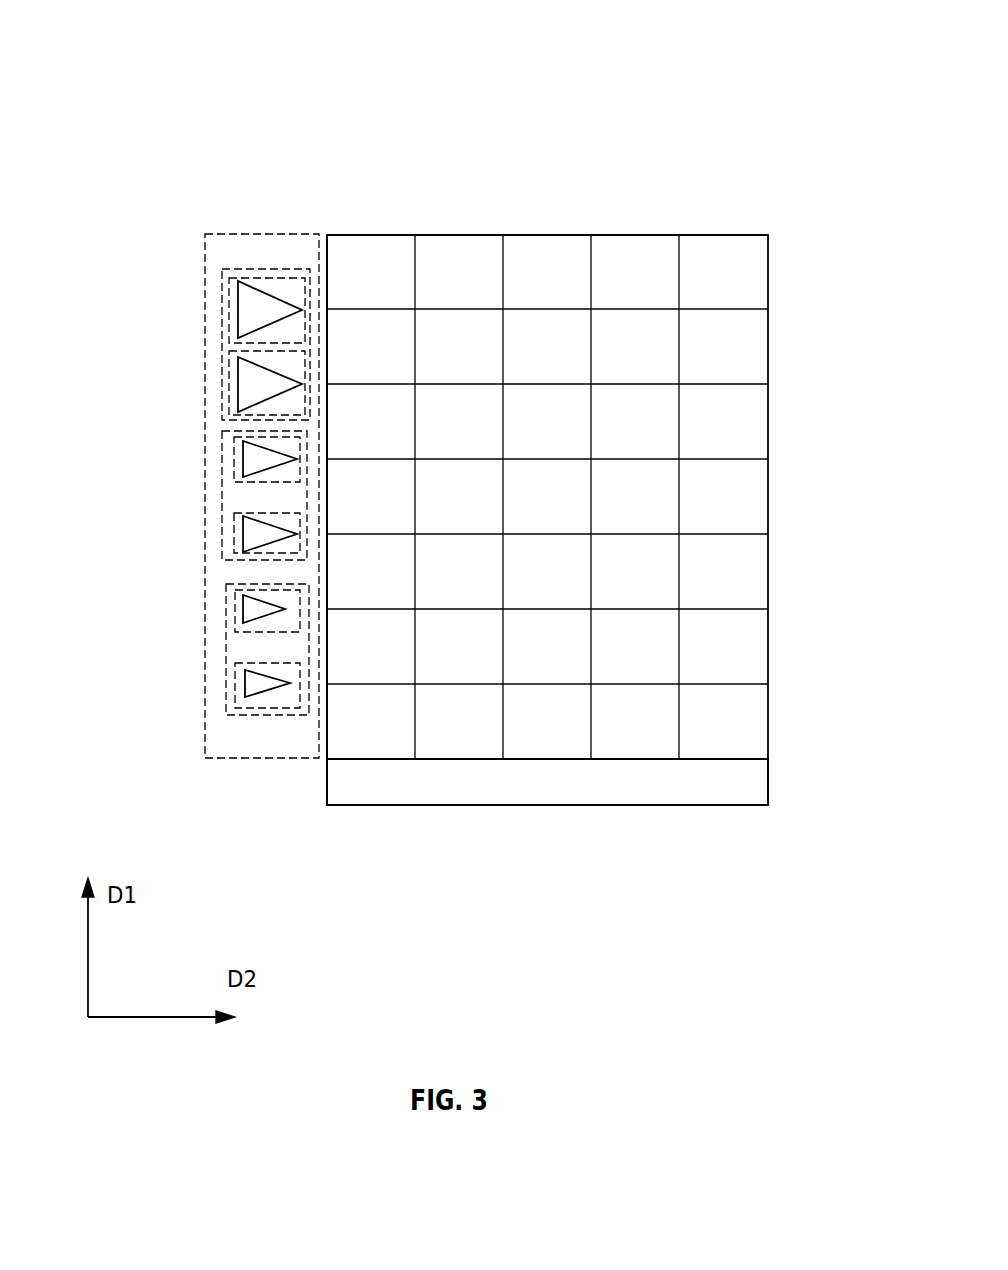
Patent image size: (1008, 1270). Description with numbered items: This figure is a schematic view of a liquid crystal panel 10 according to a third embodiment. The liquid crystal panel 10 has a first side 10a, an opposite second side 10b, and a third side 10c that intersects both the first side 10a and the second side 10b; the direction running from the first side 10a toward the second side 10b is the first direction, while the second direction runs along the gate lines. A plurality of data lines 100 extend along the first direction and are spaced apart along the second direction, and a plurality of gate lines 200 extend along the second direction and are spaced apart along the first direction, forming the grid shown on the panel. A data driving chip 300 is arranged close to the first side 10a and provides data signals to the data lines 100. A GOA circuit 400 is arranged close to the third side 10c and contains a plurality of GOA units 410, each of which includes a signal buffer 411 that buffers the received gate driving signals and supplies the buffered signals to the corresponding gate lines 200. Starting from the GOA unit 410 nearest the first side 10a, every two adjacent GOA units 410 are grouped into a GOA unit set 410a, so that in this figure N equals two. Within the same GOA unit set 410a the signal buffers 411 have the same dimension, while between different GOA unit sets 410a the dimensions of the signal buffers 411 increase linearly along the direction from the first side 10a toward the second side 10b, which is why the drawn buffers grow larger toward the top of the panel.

The liquid crystal panel 10 is at (551, 31).
The first side 10a is at (728, 760).
The second side 10b is at (745, 235).
The third side 10c is at (326, 743).
The data lines 100 is at (415, 259).
The gate lines 200 is at (752, 309).
The data driving chip 300 is at (558, 806).
The GOA circuit 400 is at (205, 520).
The GOA unit set 410a is at (223, 323).
The GOA unit 410 is at (235, 620).
The signal buffer 411 is at (242, 600).